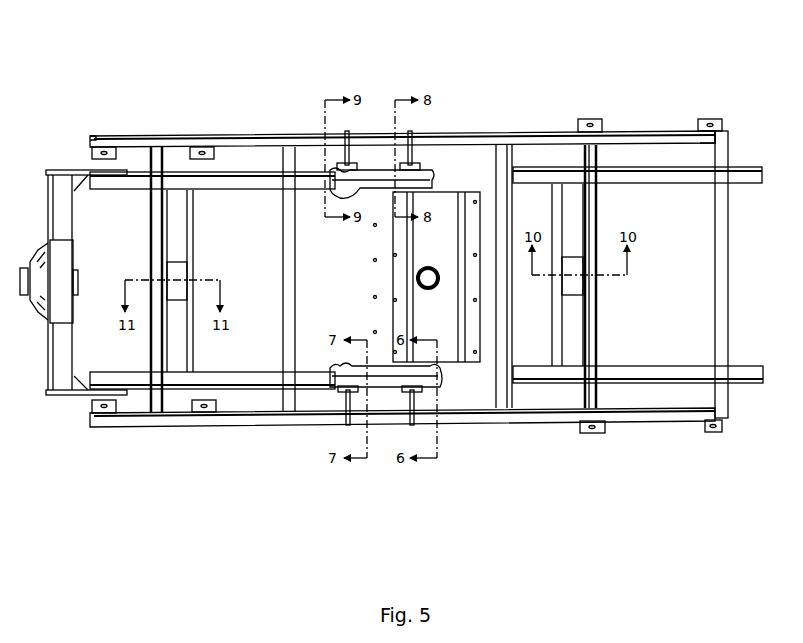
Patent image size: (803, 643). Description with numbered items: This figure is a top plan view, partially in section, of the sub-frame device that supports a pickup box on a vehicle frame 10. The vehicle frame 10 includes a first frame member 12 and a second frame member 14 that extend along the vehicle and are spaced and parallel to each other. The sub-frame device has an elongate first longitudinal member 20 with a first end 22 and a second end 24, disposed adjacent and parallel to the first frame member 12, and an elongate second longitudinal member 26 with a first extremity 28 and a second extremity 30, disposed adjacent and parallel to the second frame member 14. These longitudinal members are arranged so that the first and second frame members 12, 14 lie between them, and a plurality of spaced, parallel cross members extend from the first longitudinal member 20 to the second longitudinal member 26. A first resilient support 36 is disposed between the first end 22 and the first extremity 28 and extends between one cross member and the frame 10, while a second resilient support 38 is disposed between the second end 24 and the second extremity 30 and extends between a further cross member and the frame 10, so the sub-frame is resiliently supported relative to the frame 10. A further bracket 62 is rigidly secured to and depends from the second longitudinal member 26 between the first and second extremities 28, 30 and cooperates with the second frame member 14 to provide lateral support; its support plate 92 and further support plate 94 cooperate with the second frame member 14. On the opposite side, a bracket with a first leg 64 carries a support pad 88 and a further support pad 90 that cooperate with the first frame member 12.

The frame 10 is at (697, 348).
The first frame member 12 is at (247, 383).
The second frame member 14 is at (638, 175).
The first longitudinal member 20 is at (488, 415).
The first end 22 is at (705, 413).
The second end 24 is at (97, 412).
The second longitudinal member 26 is at (145, 145).
The first extremity 28 is at (703, 138).
The second extremity 30 is at (97, 137).
The first resilient support 36 is at (578, 312).
The second resilient support 38 is at (177, 332).
The further bracket 62 is at (403, 105).
The first leg 64 is at (400, 395).
The support pad 88 is at (362, 451).
The further support pad 90 is at (340, 400).
The support plate 92 is at (422, 166).
The further support plate 94 is at (355, 165).